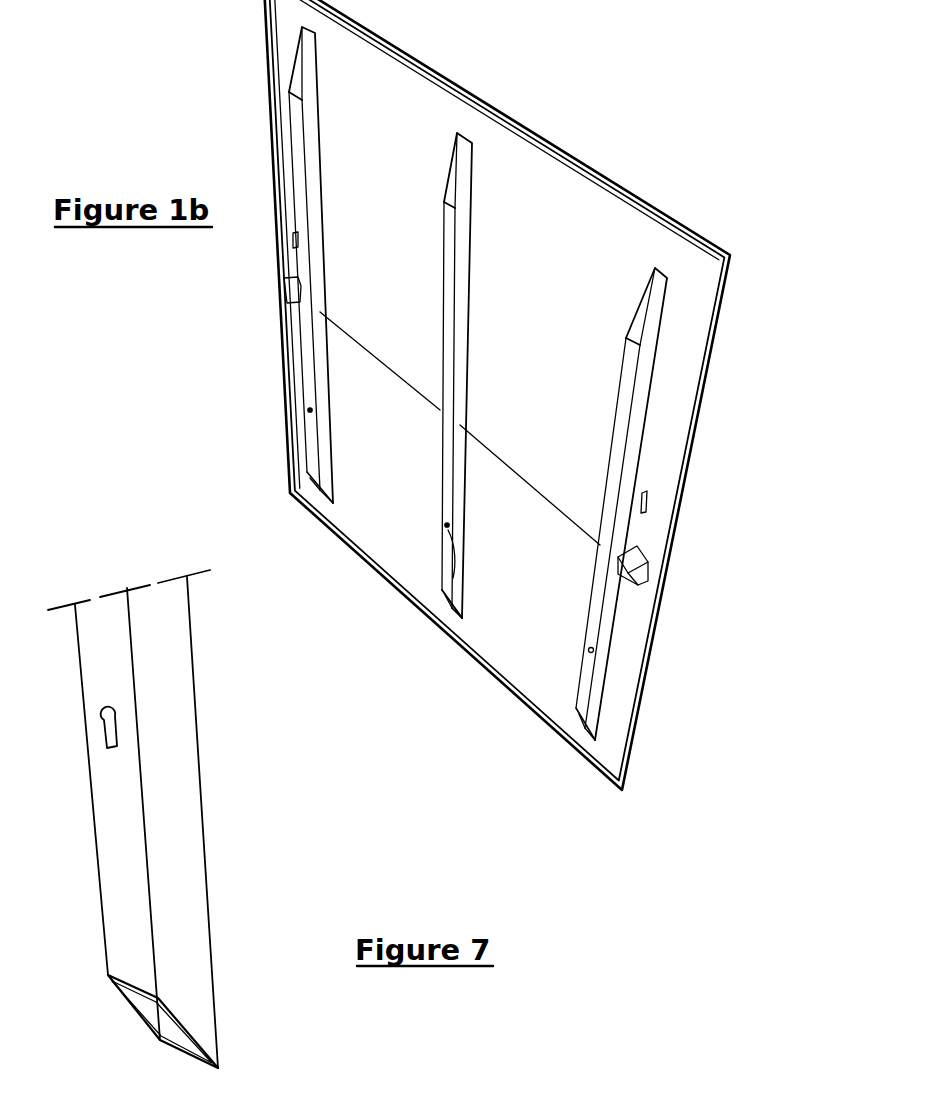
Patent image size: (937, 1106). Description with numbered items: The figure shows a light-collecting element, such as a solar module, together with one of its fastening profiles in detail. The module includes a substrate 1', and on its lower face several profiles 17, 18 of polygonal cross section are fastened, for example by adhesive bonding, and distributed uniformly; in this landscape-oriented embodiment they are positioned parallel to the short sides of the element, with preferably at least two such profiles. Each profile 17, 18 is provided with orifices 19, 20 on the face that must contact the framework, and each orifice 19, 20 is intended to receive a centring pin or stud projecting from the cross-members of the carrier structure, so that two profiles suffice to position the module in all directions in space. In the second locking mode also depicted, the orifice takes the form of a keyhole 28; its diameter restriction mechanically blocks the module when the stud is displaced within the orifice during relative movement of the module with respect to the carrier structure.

In FIG. 1b, the substrate 1' is at (521, 395).
In FIG. 1b, the profile 17 is at (643, 387).
In FIG. 7, the profile 17 is at (183, 767).
In FIG. 1b, the profile 18 is at (467, 233).
In FIG. 1b, the orifice 19 is at (445, 583).
In FIG. 1b, the orifice 20 is at (593, 650).
In FIG. 7, the keyhole 28 is at (118, 717).